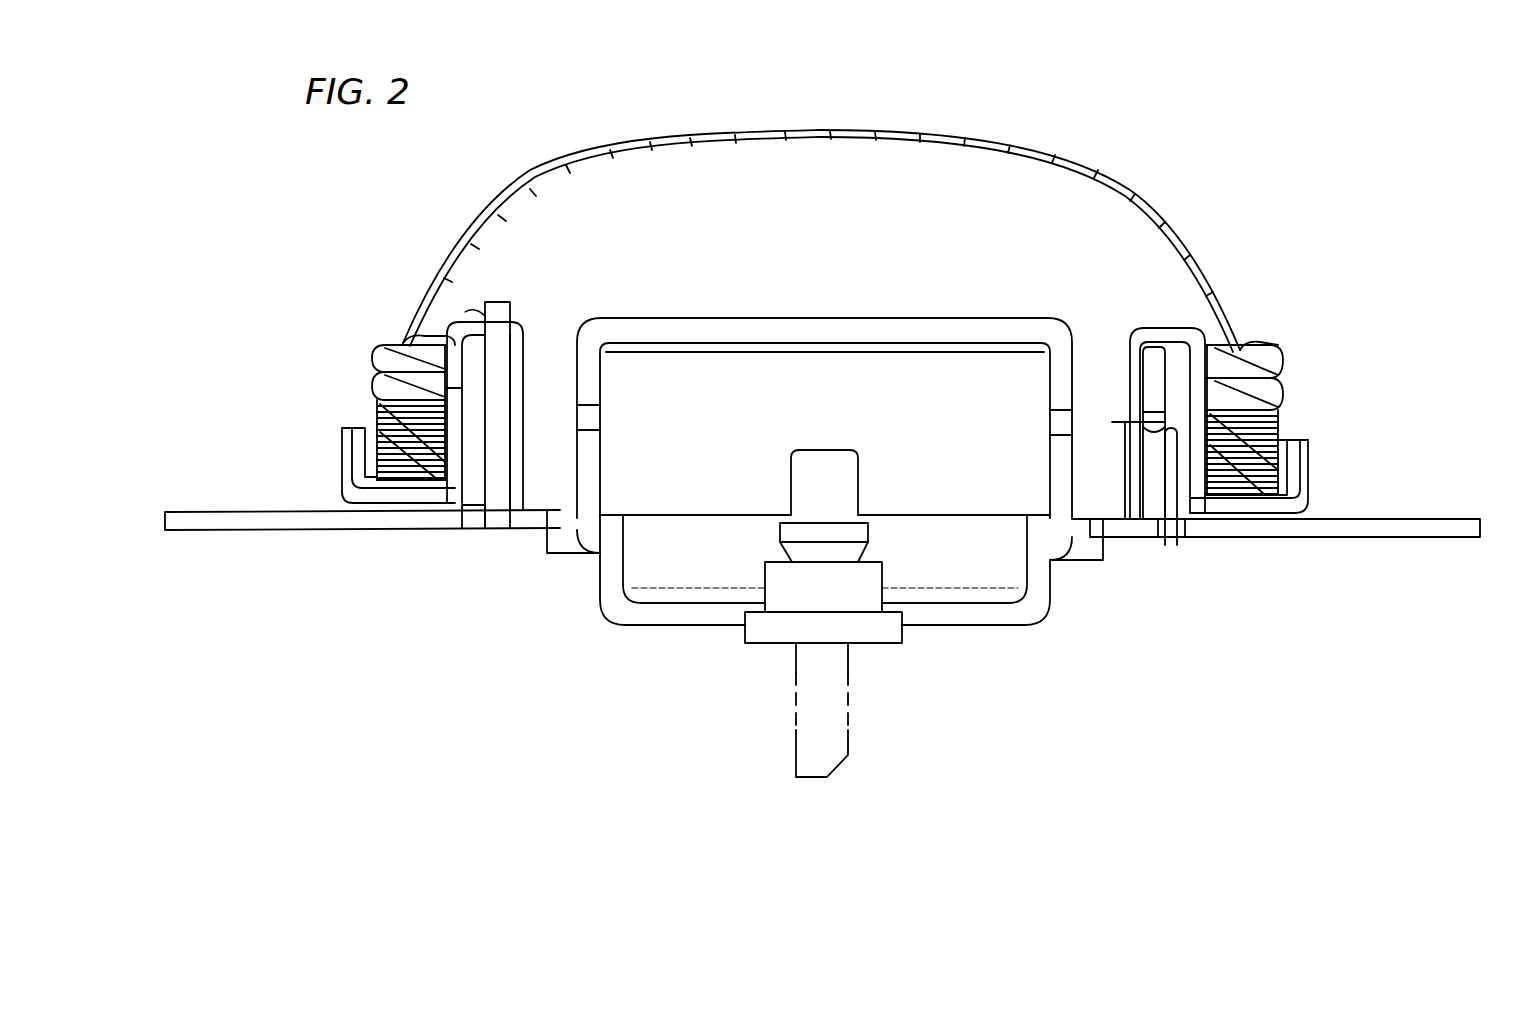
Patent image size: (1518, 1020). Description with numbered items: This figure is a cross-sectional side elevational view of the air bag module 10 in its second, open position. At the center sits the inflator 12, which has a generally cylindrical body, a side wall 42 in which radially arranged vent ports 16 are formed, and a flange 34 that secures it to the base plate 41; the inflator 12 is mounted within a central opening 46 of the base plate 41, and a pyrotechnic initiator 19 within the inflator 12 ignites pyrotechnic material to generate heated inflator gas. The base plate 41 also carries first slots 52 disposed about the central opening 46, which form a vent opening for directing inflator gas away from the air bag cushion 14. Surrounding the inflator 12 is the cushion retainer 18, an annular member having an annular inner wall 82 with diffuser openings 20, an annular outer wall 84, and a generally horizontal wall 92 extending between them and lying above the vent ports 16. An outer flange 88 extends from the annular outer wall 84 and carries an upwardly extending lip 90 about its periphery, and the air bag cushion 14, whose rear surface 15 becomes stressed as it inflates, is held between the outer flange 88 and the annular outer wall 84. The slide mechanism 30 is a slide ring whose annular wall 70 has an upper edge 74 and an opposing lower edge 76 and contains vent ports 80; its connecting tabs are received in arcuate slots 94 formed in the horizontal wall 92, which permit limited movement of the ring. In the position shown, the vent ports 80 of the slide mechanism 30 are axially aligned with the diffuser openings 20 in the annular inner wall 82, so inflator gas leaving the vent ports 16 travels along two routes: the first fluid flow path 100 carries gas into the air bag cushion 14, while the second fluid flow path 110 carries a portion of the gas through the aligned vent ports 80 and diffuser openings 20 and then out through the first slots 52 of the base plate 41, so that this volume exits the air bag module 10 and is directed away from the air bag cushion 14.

The air bag module 10 is at (738, 98).
The inflator 12 is at (848, 316).
The air bag cushion 14 is at (614, 138).
The rear surface 15 is at (522, 180).
The vent ports 16 is at (1055, 431).
The cushion retainer 18 is at (1172, 310).
The pyrotechnic initiator 19 is at (860, 488).
The diffuser openings 20 is at (1121, 415).
The slide mechanism 30 is at (513, 288).
The flange 34 is at (1093, 562).
The base plate 41 is at (300, 515).
The side wall 42 is at (571, 356).
The central opening 46 is at (1085, 527).
The first slots 52 is at (470, 524).
The annular wall 70 is at (485, 312).
The upper edge 74 is at (500, 300).
The lower edge 76 is at (490, 522).
The vent ports 80 is at (1142, 432).
The annular inner wall 82 is at (525, 378).
The annular outer wall 84 is at (385, 378).
The outer flange 88 is at (385, 497).
The upwardly extending lip 90 is at (356, 440).
The horizontal wall 92 is at (478, 319).
The slots 94 is at (482, 316).
The first fluid flow path 100 is at (1105, 520).
The second fluid flow path 110 is at (1173, 652).